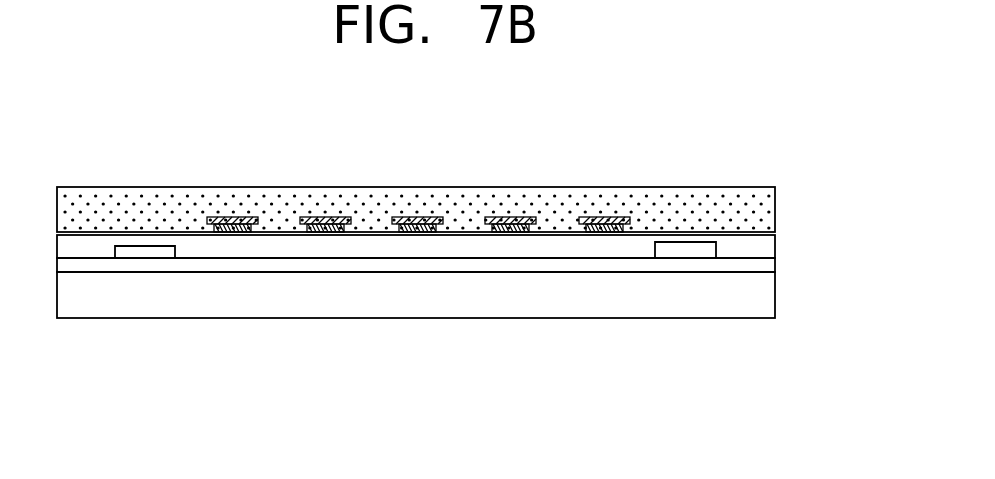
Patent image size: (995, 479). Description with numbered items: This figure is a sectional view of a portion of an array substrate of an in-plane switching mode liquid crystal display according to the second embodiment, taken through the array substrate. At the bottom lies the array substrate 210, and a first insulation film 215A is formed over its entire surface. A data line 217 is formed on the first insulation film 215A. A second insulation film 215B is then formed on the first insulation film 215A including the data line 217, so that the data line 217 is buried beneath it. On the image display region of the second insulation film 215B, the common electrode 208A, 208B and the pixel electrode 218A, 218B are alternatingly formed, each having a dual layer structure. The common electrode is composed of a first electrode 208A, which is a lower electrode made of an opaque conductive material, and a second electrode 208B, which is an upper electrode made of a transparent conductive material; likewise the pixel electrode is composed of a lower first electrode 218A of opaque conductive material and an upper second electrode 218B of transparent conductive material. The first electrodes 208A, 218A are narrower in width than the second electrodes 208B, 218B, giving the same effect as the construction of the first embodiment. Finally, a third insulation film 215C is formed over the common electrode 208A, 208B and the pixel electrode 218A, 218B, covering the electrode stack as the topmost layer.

The third insulation film 215C is at (763, 217).
The second insulation film 215B is at (763, 245).
The first insulation film 215A is at (763, 260).
The array substrate 210 is at (763, 293).
The data line 217 is at (147, 252).
The first electrode of common electrode 208A is at (227, 233).
The second electrode of common electrode 208B is at (238, 233).
The first electrode of pixel electrode 218A is at (320, 233).
The second electrode of pixel electrode 218B is at (330, 233).